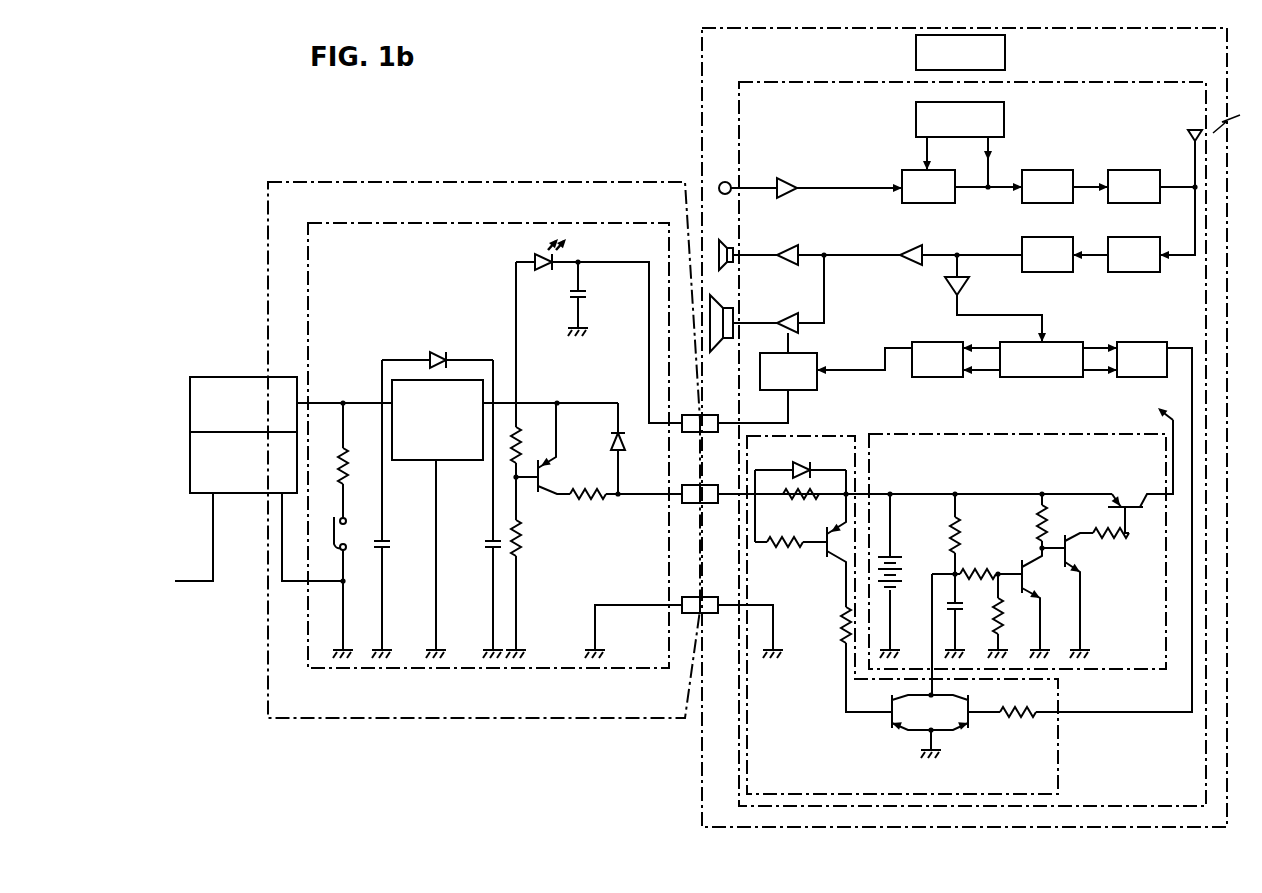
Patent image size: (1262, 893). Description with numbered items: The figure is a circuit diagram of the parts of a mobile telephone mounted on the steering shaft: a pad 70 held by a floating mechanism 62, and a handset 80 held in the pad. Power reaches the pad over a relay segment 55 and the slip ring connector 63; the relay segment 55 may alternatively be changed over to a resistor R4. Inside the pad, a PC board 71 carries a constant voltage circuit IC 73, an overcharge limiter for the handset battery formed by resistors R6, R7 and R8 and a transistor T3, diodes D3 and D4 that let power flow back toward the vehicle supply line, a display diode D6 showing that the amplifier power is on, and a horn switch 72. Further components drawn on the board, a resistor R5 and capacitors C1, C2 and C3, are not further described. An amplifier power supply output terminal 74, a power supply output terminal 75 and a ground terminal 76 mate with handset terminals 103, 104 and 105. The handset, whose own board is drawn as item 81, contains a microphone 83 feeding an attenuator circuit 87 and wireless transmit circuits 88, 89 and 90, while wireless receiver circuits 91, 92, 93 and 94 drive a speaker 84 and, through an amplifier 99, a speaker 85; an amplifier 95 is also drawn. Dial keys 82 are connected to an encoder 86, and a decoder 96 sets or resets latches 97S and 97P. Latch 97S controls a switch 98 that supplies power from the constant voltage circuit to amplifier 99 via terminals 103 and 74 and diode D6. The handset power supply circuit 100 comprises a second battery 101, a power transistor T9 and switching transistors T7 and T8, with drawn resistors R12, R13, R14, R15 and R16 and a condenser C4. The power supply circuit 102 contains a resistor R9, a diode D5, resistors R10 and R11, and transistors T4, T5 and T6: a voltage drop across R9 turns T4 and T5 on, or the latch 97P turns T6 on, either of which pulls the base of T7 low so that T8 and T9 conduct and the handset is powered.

The relay segment 55 is at (188, 400).
The slip ring connector 63 is at (247, 377).
The floating mechanism 62 is at (246, 493).
The resistor R4 is at (181, 543).
The pad unit 70 is at (338, 182).
The PC board of the pad unit 71 is at (492, 223).
The resistor R5 is at (341, 472).
The horn switch 72 is at (336, 548).
The capacitor C1 is at (388, 549).
The capacitor C2 is at (491, 549).
The diode D3 is at (440, 352).
The constant voltage circuit IC 73 is at (470, 460).
The display diode D6 is at (543, 270).
The capacitor C3 is at (586, 293).
The resistor R6 is at (522, 448).
The resistor R7 is at (521, 558).
The transistor T3 is at (542, 496).
The resistor R8 is at (592, 497).
The diode D4 is at (625, 445).
The amplifier power supply output terminal 74 is at (691, 415).
The power supply output terminal 75 is at (691, 485).
The ground terminal 76 is at (691, 597).
The handset terminal 103 is at (709, 415).
The power terminal of the handset 104 is at (709, 485).
The handset terminal 105 is at (709, 597).
The handset 80 is at (700, 80).
The print board on handset 81 is at (850, 82).
The dial keys 82 is at (1005, 52).
The microphone 83 is at (725, 182).
The speaker 84 is at (725, 239).
The speaker 85 is at (726, 299).
The encoder 86 is at (1004, 114).
The attenuator circuit 87 is at (908, 170).
The wireless transmit circuit 88 is at (1060, 170).
The wireless transmit circuit 89 is at (1136, 170).
The wireless transmit and receiver circuit element 90 is at (1193, 129).
The wireless receiver circuit 91 is at (1150, 237).
The wireless receiver circuit 92 is at (1058, 237).
The wireless receiver circuit 93 is at (926, 250).
The wireless receiver circuit 94 is at (800, 250).
The amplifier 95 is at (969, 286).
The decoder 96 is at (1066, 342).
The latch 97S is at (936, 342).
The latch 97P is at (1145, 342).
The switch 98 is at (818, 358).
The amplifier 99 is at (788, 313).
The handset power supply circuit 100 is at (995, 434).
The second battery 101 is at (901, 574).
The power supply circuit 102 is at (800, 432).
The diode D5 is at (800, 491).
The resistor R9 is at (816, 507).
The resistor R10 is at (793, 548).
The transistor T4 is at (836, 560).
The resistor R11 is at (841, 630).
The resistor R12 is at (961, 531).
The condenser C4 is at (959, 614).
The resistor R13 is at (977, 632).
The resistor R14 is at (1002, 611).
The switching transistor T7 is at (1030, 576).
The resistor R15 is at (1037, 515).
The switching transistor T8 is at (1077, 550).
The resistor R16 is at (1024, 745).
The power transistor T9 is at (1135, 492).
The transistor T5 is at (906, 731).
The transistor T6 is at (960, 731).